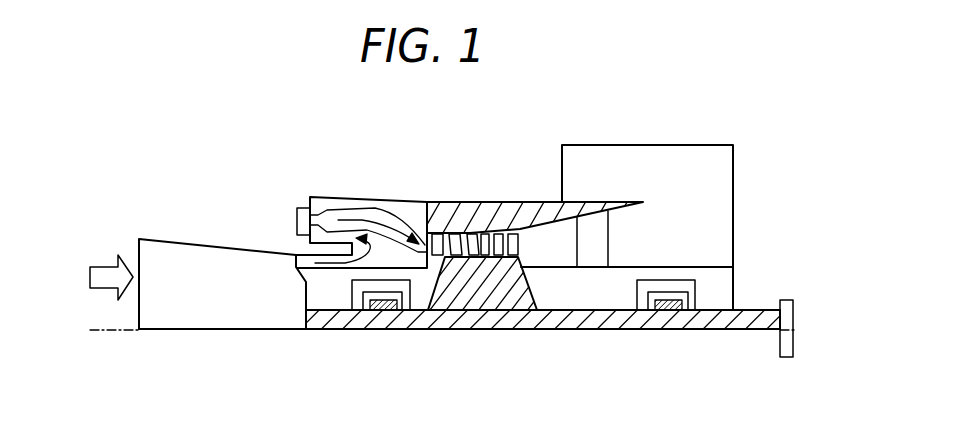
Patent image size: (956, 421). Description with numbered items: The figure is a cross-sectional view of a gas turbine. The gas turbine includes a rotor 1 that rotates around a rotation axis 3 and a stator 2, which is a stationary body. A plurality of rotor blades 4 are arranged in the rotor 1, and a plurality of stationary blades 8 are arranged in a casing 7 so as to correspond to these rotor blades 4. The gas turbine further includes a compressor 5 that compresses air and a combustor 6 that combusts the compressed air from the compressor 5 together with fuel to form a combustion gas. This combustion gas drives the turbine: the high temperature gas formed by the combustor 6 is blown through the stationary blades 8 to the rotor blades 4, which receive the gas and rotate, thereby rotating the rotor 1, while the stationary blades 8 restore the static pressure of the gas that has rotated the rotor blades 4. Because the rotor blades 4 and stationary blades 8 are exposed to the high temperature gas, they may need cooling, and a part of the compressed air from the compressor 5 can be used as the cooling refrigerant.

The rotor 1 is at (757, 320).
The stator 2 is at (325, 197).
The rotation axis 3 is at (117, 331).
The rotor blade 4 is at (515, 249).
The compressor 5 is at (205, 267).
The combustor 6 is at (373, 204).
The casing 7 is at (500, 208).
The stationary blade 8 is at (440, 206).